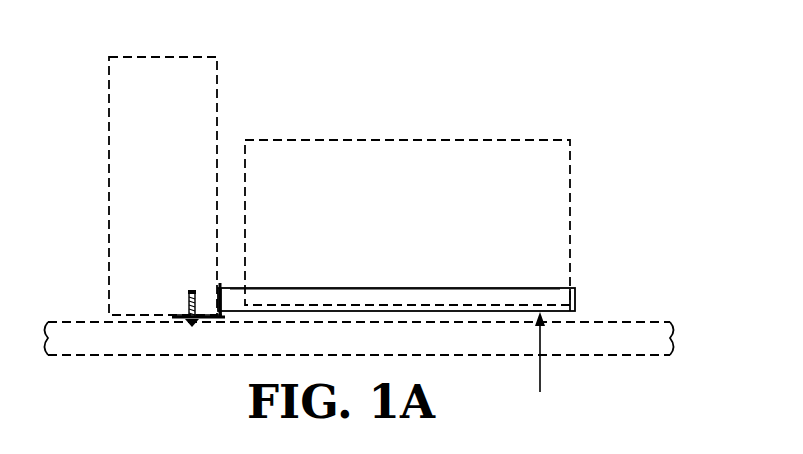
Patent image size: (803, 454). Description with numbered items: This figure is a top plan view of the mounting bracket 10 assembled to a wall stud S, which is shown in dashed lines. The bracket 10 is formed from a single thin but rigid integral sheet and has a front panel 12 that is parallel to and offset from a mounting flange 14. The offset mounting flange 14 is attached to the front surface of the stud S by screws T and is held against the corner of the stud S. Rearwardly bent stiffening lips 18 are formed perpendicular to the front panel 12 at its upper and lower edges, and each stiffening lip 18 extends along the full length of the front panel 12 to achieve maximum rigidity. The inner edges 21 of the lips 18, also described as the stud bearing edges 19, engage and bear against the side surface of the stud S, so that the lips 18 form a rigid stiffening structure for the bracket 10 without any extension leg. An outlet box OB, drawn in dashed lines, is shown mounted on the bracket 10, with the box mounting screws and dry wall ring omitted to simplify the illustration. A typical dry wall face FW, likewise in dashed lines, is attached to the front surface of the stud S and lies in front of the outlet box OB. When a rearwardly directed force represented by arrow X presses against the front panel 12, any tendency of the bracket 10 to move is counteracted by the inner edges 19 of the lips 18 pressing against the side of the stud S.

The wall stud S is at (113, 167).
The outlet box OB is at (384, 140).
The dry wall face FW is at (125, 344).
The mounting bracket 10 is at (455, 280).
The front panel 12 is at (551, 312).
The mounting flange 14 is at (184, 316).
The stiffening lips 18 is at (397, 256).
The stud bearing edges 19 is at (212, 316).
The inner edges 21 is at (218, 294).
The screws T is at (190, 288).
The arrow X is at (539, 365).